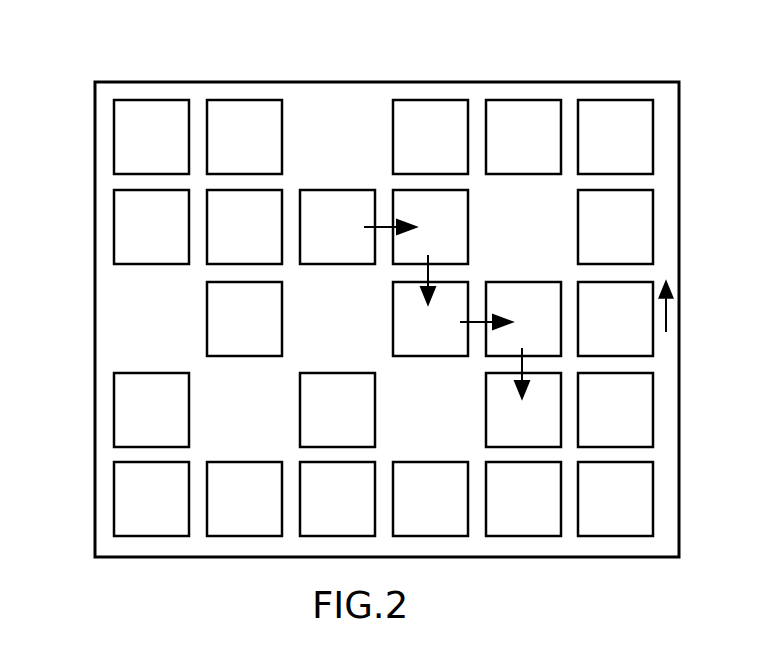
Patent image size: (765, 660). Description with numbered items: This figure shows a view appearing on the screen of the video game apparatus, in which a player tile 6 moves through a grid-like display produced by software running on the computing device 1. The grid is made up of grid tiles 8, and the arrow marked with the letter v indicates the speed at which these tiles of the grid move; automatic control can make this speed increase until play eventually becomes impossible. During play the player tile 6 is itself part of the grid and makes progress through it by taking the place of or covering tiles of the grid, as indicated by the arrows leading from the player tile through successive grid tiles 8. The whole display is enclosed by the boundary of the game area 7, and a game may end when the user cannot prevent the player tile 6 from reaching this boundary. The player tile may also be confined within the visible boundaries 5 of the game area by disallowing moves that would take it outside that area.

The computing device 1 is at (383, 318).
The visible boundaries 5 is at (95, 232).
The player tile 6 is at (317, 200).
The boundary of the game area 7 is at (485, 80).
The grid tiles 8 is at (668, 310).